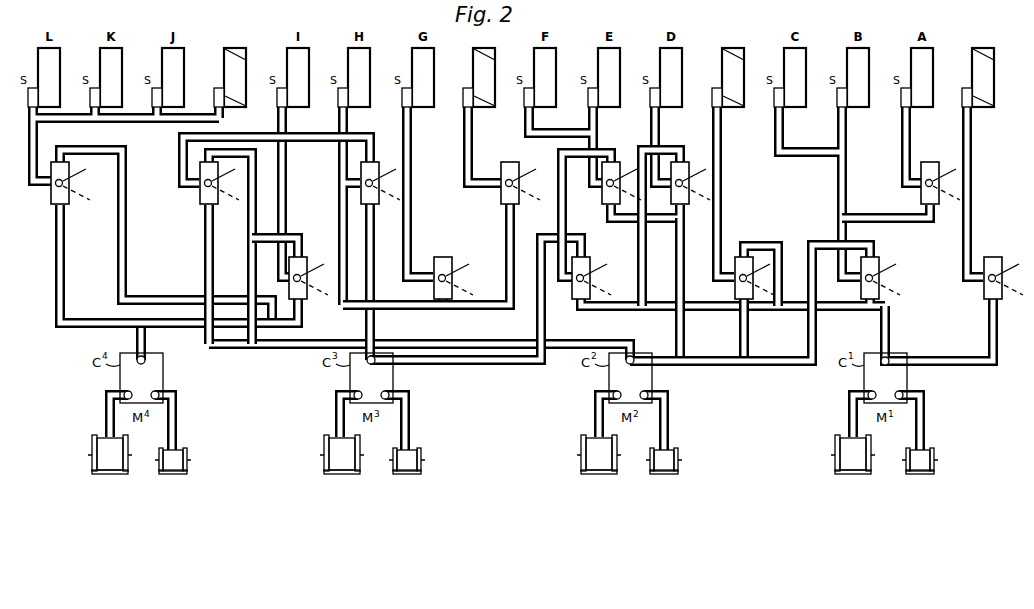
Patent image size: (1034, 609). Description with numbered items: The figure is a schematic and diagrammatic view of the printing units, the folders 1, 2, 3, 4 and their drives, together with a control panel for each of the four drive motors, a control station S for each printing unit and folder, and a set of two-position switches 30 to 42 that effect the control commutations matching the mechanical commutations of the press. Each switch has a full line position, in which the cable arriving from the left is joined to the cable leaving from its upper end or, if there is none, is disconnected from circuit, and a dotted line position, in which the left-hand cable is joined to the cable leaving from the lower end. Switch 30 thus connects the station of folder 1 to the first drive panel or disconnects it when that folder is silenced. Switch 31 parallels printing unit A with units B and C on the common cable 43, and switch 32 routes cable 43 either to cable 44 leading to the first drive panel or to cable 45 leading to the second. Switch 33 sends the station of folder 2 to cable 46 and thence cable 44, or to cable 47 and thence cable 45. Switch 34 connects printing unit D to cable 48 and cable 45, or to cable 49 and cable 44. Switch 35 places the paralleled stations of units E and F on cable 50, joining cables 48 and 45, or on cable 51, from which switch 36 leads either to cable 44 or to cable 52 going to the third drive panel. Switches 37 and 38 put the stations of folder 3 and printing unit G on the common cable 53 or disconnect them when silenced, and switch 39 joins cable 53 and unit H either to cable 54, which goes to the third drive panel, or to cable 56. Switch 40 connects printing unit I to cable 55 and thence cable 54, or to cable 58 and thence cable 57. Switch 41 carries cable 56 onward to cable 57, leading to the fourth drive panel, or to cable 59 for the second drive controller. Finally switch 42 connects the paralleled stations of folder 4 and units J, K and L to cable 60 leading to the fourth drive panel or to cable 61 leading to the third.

The folder 1 is at (974, 68).
The folder 2 is at (724, 68).
The folder 3 is at (475, 68).
The folder 4 is at (226, 68).
The switch 30 is at (1001, 287).
The switch 31 is at (937, 163).
The switch 32 is at (880, 265).
The switch 33 is at (735, 287).
The switch 34 is at (689, 166).
The switch 35 is at (602, 202).
The switch 36 is at (592, 260).
The switch 37 is at (518, 163).
The switch 38 is at (445, 257).
The switch 39 is at (378, 166).
The switch 40 is at (305, 258).
The switch 41 is at (200, 200).
The switch 42 is at (52, 198).
The cable 43 is at (838, 222).
The cable 44 is at (891, 332).
The cable 45 is at (818, 349).
The cable 46 is at (775, 244).
The cable 47 is at (750, 340).
The cable 48 is at (687, 262).
The cable 49 is at (637, 151).
The cable 50 is at (672, 226).
The cable 51 is at (558, 193).
The cable 52 is at (548, 318).
The cable 53 is at (505, 254).
The cable 54 is at (375, 255).
The cable 55 is at (308, 322).
The cable 56 is at (324, 134).
The cable 57 is at (254, 200).
The cable 58 is at (292, 236).
The cable 59 is at (205, 262).
The cable 60 is at (66, 272).
The cable 61 is at (125, 201).